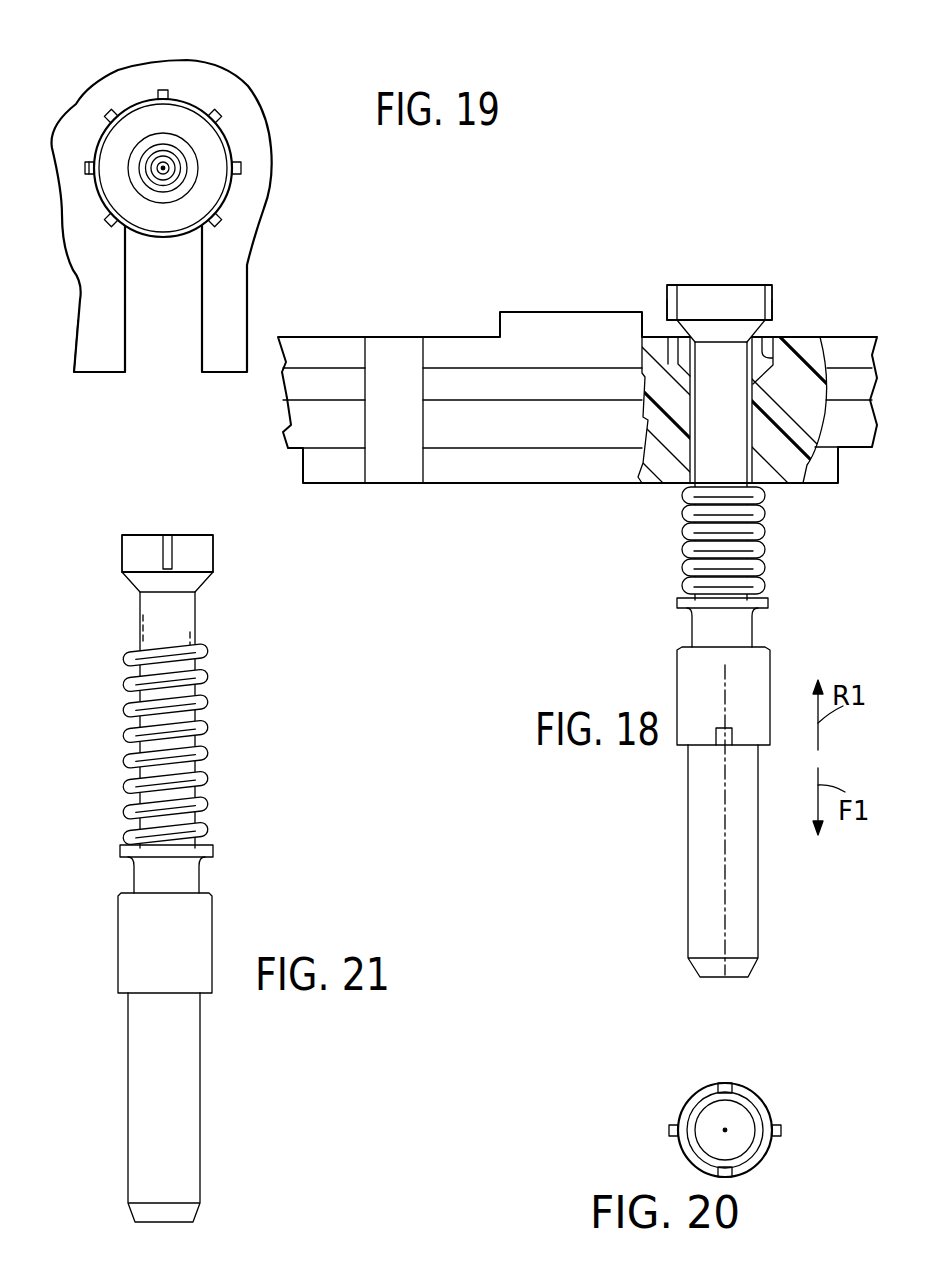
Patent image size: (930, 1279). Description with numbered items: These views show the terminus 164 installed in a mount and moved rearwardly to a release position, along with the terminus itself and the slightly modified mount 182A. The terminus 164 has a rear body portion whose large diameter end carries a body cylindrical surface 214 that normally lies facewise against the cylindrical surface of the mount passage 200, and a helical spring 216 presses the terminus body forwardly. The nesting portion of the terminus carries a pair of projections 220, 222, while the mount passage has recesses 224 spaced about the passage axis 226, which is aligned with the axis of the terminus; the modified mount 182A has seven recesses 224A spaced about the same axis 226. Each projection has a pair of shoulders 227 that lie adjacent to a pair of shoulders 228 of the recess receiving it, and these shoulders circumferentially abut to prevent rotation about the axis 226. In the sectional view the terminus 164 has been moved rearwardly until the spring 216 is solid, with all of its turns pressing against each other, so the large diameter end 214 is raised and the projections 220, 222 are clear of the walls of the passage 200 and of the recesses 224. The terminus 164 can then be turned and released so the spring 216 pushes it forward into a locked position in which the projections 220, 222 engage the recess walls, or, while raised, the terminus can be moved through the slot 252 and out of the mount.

In FIG. 19, the terminus 164 is at (186, 152).
In FIG. 18, the terminus 164 is at (727, 604).
In FIG. 21, the terminus 164 is at (232, 805).
In FIG. 19, the modified mount 182A is at (117, 72).
In FIG. 18, the passage 200 is at (770, 343).
In FIG. 18, the body cylindrical surface 214 is at (736, 292).
In FIG. 18, the helical spring 216 is at (690, 586).
In FIG. 19, the projection 220 is at (238, 172).
In FIG. 18, the projection 220 is at (772, 303).
In FIG. 20, the projection 220 is at (818, 1100).
In FIG. 19, the projection 222 is at (97, 172).
In FIG. 18, the projection 222 is at (671, 298).
In FIG. 20, the projection 222 is at (672, 1130).
In FIG. 18, the recesses 224 is at (676, 342).
In FIG. 19, the recesses 224A is at (160, 90).
In FIG. 19, the passage axis 226 is at (170, 172).
In FIG. 19, the projection shoulders 227 is at (92, 160).
In FIG. 19, the recess shoulders 228 is at (234, 163).
In FIG. 19, the slot 252 is at (128, 343).